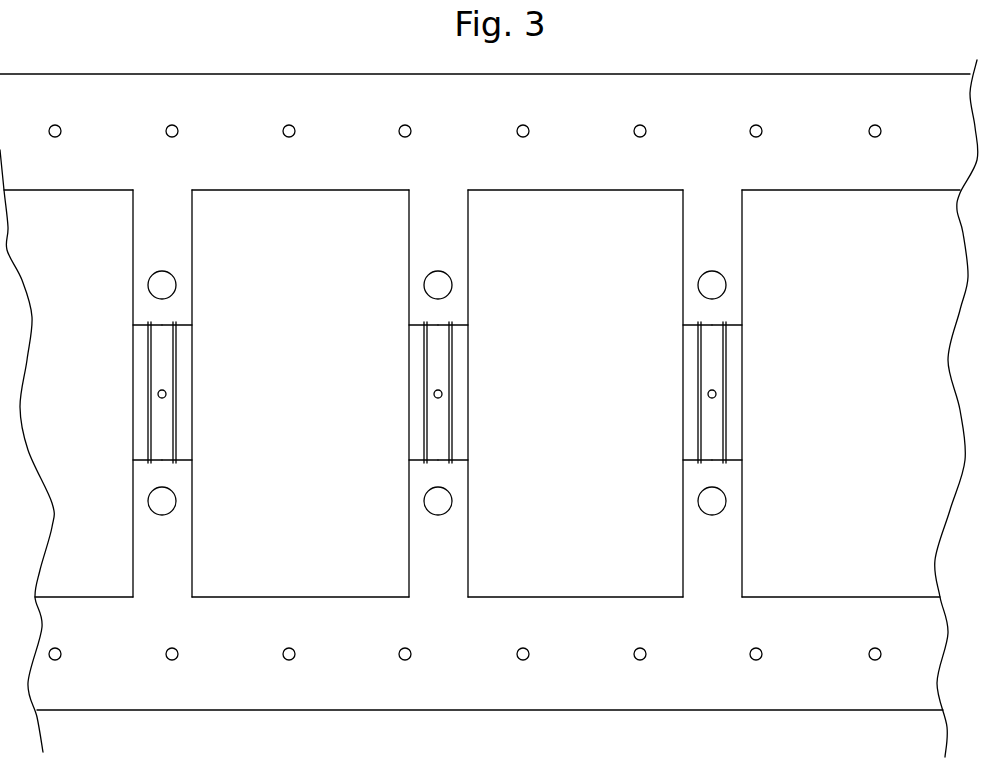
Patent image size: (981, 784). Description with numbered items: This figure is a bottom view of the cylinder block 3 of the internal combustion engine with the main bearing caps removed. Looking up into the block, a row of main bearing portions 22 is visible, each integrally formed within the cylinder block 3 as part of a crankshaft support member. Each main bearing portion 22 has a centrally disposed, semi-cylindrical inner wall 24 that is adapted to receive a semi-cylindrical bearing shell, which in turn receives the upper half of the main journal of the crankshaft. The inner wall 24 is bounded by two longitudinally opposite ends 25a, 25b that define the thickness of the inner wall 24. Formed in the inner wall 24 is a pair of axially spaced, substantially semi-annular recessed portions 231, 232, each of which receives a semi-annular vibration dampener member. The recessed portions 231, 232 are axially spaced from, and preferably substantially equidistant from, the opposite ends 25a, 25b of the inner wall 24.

The cylinder block 3 is at (813, 699).
The main bearing portion 22 is at (180, 523).
The semi-cylindrical inner wall 24 is at (185, 343).
The semi-annular recessed portion 231 is at (176, 367).
The semi-annular recessed portion 232 is at (133, 442).
The longitudinally opposite end of the inner wall 25a is at (192, 447).
The longitudinally opposite end of the inner wall 25b is at (133, 406).